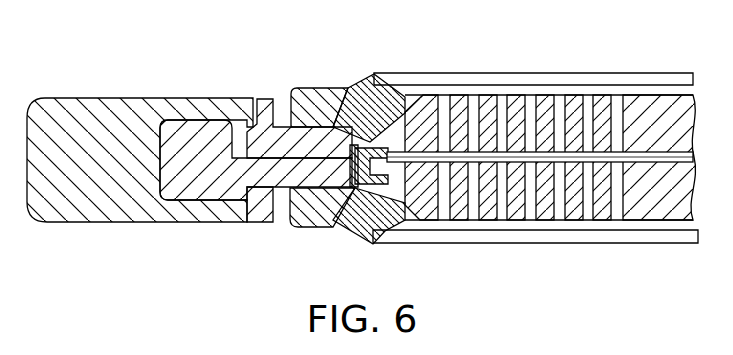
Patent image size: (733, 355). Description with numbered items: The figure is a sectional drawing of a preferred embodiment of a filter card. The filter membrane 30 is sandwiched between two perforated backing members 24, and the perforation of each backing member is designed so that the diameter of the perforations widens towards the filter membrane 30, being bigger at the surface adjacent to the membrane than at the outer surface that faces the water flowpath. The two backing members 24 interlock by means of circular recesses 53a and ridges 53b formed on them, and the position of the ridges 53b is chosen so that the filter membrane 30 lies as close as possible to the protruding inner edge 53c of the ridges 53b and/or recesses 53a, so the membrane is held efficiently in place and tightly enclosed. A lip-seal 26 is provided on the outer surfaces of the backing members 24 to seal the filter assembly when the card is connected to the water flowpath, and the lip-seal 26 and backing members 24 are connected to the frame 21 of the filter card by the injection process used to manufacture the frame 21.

The frame 21 is at (67, 98).
The perforated backing member 24 is at (261, 98).
The lip-seal 26 is at (535, 73).
The filter membrane 30 is at (386, 152).
The circular recess 53a is at (368, 232).
The ridge 53b is at (333, 103).
The protruding inner edge 53c is at (358, 150).